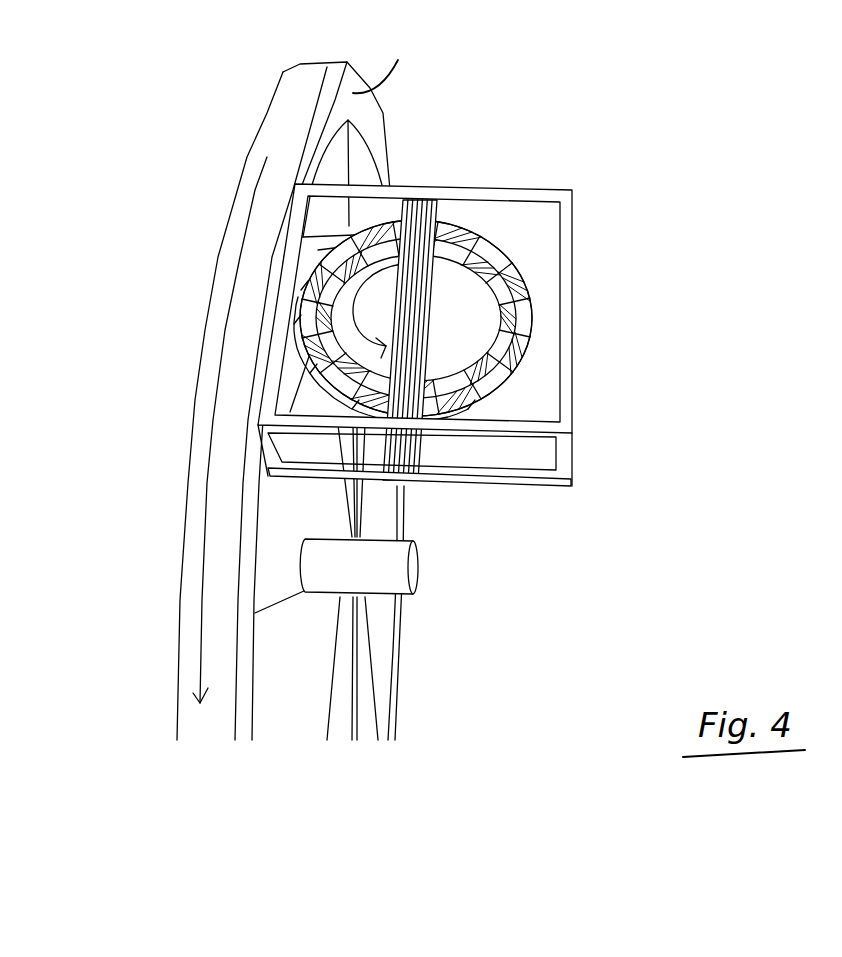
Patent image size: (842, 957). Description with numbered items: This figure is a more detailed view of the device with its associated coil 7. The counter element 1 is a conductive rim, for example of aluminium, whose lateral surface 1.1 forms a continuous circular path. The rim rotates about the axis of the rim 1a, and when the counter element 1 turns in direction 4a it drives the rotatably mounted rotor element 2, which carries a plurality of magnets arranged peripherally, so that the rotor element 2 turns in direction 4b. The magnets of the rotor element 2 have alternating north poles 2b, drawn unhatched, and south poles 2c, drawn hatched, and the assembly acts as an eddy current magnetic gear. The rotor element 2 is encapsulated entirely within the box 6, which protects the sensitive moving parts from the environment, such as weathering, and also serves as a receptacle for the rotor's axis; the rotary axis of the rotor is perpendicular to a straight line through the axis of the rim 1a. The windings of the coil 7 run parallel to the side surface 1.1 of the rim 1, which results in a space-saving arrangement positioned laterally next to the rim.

The counter element 1 is at (270, 113).
The axis of the rim 1a is at (410, 575).
The lateral surface 1.1 is at (409, 65).
The rotor element 2 is at (480, 315).
The north poles 2b is at (503, 258).
The south poles 2c is at (528, 280).
The direction of rotational movement of the counter element 4a is at (243, 221).
The direction of rotational movement of the rotor element 4b is at (353, 327).
The box 6 is at (565, 425).
The coil 7 is at (432, 196).